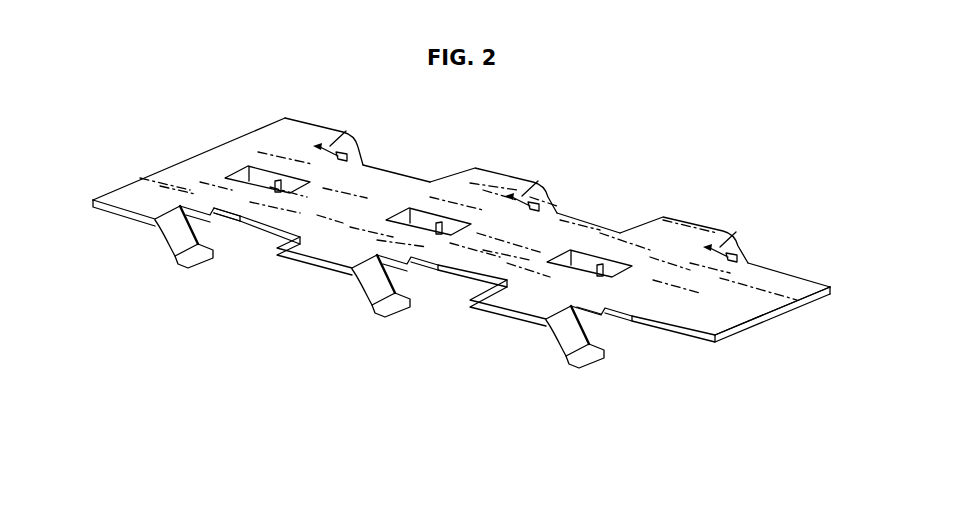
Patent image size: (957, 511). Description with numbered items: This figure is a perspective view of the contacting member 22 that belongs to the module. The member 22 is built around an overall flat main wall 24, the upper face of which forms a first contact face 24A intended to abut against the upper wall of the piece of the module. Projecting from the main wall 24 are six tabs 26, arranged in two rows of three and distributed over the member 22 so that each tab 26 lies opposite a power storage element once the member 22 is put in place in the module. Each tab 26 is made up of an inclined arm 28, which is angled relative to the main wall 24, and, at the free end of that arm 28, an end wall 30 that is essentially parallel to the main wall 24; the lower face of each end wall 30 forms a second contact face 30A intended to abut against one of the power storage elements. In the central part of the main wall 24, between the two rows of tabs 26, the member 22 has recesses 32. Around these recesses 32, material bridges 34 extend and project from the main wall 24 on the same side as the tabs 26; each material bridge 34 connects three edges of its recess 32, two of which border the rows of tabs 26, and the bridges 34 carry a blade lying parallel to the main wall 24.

The contacting member 22 is at (552, 128).
The main wall 24 is at (740, 290).
The first contact face 24A is at (689, 228).
The tab 26 is at (155, 249).
The inclined arm 28 is at (376, 282).
The end wall 30 is at (590, 342).
The second contact face 30A is at (181, 268).
The recess 32 is at (597, 272).
The material bridge 34 is at (424, 212).